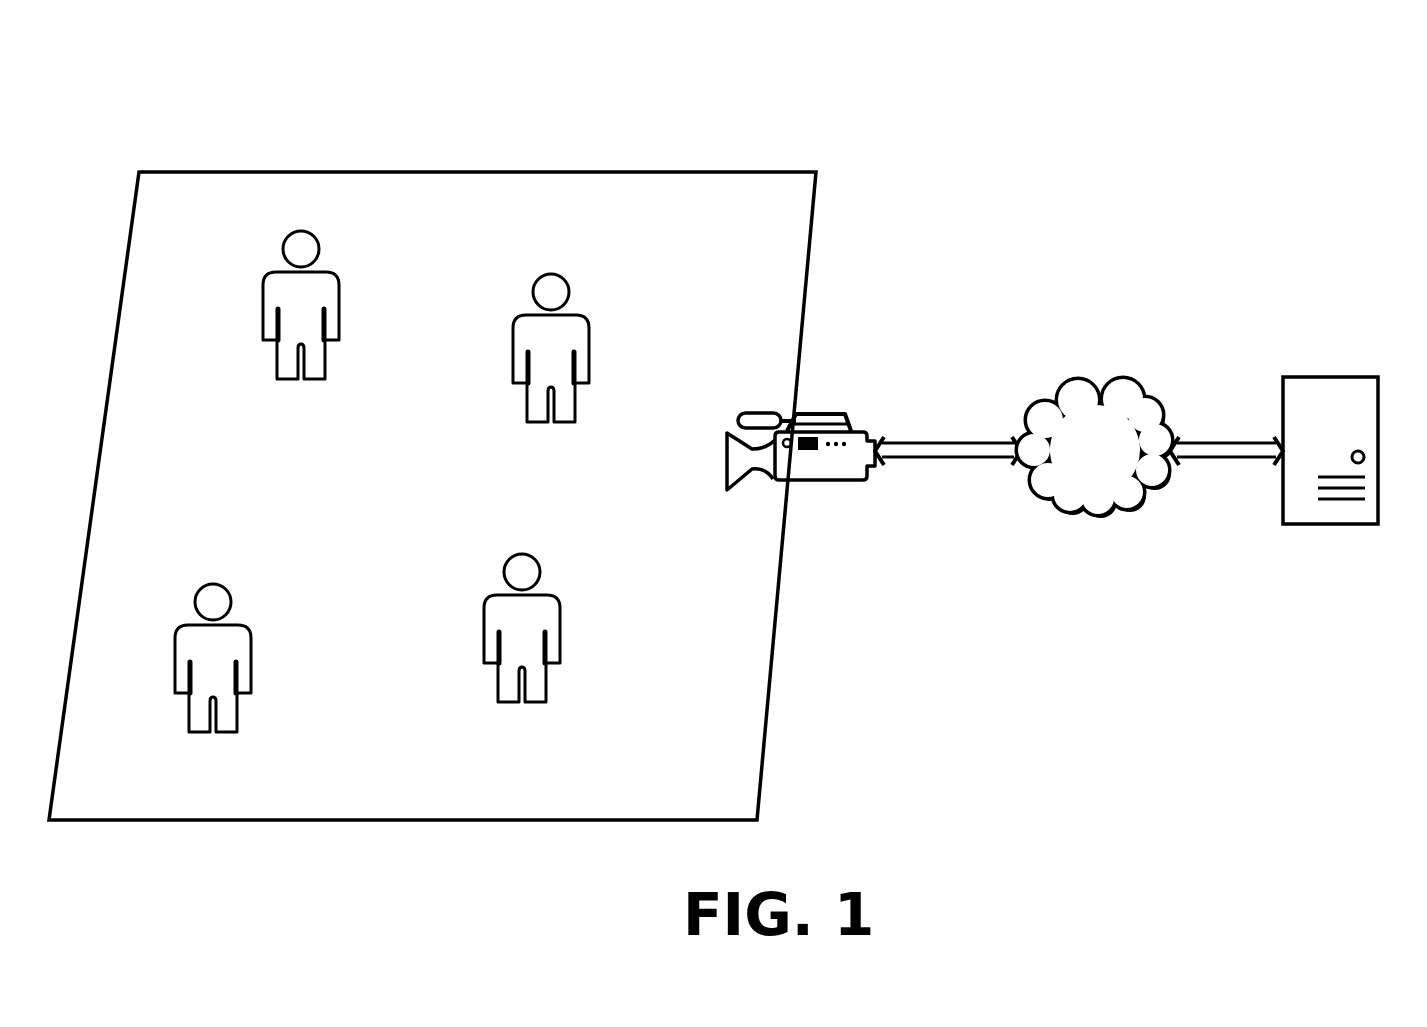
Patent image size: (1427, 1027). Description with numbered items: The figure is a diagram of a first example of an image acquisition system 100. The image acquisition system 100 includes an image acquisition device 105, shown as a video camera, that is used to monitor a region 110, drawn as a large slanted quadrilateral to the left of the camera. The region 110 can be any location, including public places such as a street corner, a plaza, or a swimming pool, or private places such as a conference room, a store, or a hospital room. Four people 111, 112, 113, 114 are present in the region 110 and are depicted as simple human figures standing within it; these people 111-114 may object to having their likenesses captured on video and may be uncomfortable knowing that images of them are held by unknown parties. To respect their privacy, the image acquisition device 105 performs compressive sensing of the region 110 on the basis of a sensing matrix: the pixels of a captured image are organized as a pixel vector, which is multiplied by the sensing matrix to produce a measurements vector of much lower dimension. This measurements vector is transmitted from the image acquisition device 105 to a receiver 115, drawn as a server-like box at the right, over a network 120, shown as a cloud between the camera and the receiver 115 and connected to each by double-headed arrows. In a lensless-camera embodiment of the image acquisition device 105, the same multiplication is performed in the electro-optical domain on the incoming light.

The image acquisition system 100 is at (1322, 80).
The image acquisition device 105 is at (815, 482).
The region 110 is at (641, 172).
The person 111 is at (262, 310).
The person 112 is at (512, 354).
The person 113 is at (483, 632).
The person 114 is at (174, 667).
The receiver 115 is at (1330, 526).
The network 120 is at (1078, 473).